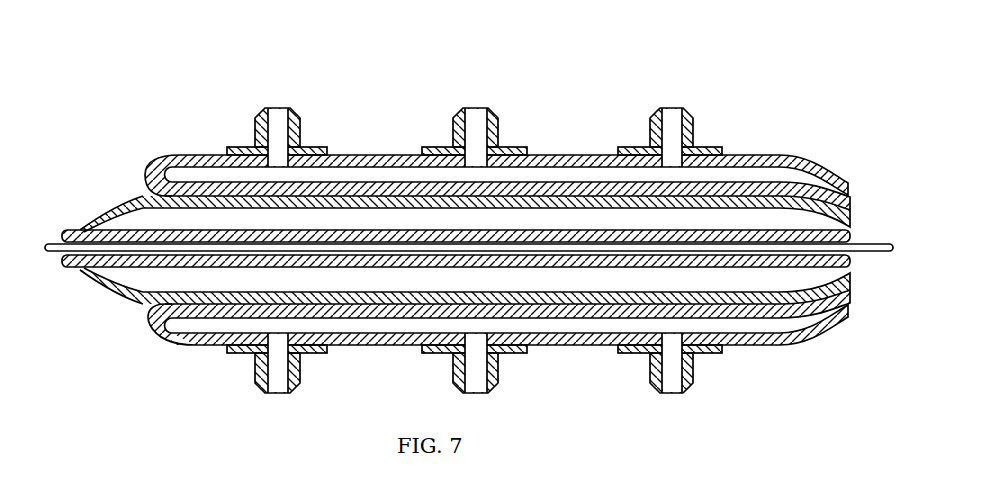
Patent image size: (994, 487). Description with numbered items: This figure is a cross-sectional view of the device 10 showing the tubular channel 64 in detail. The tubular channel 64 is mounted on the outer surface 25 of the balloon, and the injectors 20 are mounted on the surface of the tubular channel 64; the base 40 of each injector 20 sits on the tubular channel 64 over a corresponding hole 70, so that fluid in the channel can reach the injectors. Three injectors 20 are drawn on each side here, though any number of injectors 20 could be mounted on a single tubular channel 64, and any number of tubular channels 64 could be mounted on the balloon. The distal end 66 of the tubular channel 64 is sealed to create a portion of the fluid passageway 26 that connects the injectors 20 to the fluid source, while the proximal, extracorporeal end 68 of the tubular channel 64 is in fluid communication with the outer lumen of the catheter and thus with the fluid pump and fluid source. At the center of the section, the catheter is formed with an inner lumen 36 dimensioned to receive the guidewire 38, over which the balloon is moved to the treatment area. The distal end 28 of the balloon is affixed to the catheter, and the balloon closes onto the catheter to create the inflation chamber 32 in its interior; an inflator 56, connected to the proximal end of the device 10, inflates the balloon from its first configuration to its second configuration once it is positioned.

The device 10 is at (805, 412).
The injectors 20 is at (272, 112).
The outer surface of balloon 25 is at (552, 200).
The fluid passageway 26 is at (580, 180).
The distal end of balloon 28 is at (97, 279).
The inflation chamber 32 is at (147, 293).
The inner lumen 36 is at (62, 237).
The guidewire 38 is at (62, 259).
The base of injector 40 is at (305, 146).
The inflator 56 is at (82, 229).
The tubular channel 64 is at (752, 156).
The distal end of tubular channel 66 is at (148, 165).
The proximal end of tubular channel 68 is at (833, 180).
The hole 70 is at (672, 106).